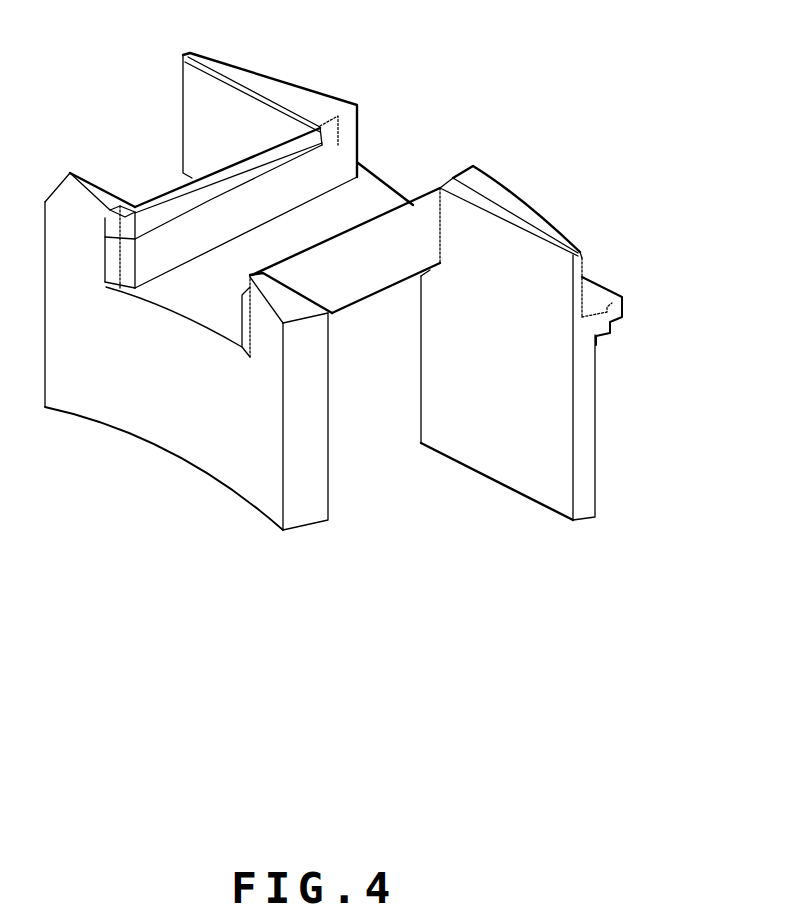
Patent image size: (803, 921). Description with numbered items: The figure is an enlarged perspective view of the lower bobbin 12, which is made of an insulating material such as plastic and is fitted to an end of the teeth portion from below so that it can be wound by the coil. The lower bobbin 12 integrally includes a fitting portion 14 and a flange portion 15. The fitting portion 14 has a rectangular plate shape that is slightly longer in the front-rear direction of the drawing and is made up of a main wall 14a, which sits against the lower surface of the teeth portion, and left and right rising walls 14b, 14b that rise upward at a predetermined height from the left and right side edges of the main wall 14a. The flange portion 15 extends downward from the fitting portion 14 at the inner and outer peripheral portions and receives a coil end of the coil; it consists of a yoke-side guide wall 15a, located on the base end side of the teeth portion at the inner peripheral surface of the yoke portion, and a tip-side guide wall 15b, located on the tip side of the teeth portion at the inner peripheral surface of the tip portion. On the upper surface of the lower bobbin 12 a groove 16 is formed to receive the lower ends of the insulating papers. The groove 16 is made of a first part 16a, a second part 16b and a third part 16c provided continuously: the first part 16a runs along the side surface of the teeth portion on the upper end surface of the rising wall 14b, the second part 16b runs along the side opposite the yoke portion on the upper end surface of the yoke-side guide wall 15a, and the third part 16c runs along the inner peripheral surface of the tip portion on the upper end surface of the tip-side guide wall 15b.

The lower bobbin 12 is at (507, 147).
The fitting portion 14 is at (380, 163).
The main wall 14a is at (282, 242).
The rising wall 14b is at (411, 204).
The flange portion 15 is at (206, 478).
The yoke-side guide wall 15a is at (493, 462).
The tip-side guide wall 15b is at (110, 410).
The groove 16 is at (258, 73).
The first part 16a is at (230, 183).
The second part 16b is at (290, 102).
The third part 16c is at (115, 222).